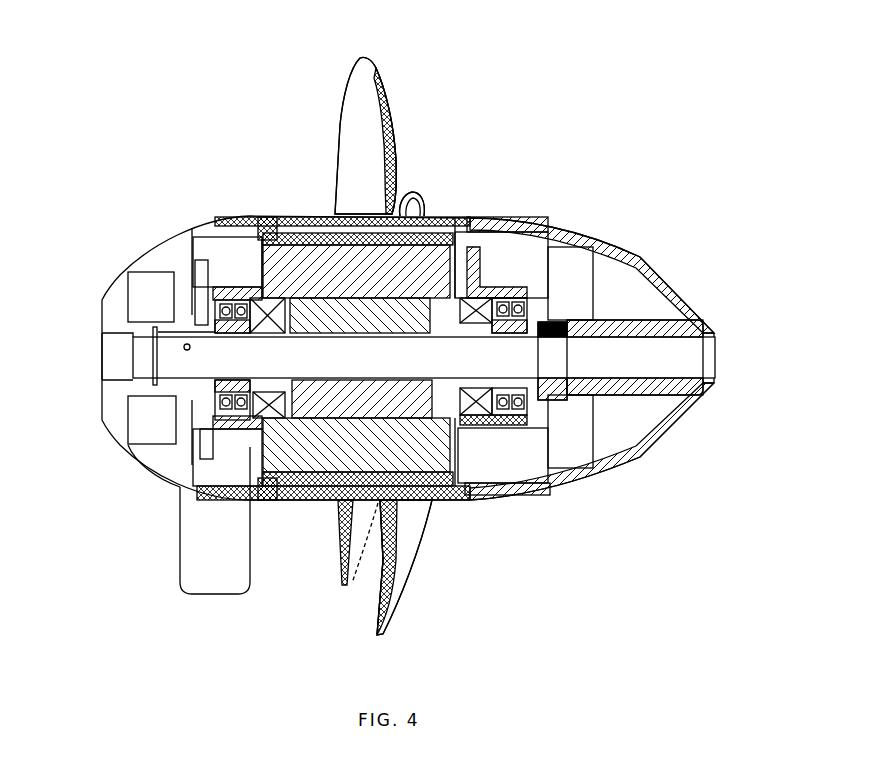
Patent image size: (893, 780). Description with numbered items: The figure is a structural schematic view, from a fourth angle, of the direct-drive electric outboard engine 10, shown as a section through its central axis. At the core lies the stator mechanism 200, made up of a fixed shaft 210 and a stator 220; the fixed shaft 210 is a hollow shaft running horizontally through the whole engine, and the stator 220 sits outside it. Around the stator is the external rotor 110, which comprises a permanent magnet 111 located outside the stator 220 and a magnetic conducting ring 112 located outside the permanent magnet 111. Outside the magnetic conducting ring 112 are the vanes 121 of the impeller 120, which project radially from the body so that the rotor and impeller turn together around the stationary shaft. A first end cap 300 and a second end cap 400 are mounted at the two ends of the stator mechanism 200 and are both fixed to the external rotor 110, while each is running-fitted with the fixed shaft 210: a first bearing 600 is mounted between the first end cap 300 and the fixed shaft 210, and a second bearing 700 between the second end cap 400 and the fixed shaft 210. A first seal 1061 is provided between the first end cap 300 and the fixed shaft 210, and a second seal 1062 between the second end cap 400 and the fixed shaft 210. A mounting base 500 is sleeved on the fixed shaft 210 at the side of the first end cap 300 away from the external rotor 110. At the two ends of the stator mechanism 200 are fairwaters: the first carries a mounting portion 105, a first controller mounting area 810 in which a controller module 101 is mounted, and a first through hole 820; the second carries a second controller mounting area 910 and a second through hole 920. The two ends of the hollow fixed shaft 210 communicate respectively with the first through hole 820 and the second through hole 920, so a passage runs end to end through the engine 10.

The direct-drive electric outboard engine 10 is at (406, 26).
The controller module 101 is at (150, 448).
The mounting portion 105 is at (190, 549).
The external rotor 110 is at (510, 107).
The permanent magnet 111 is at (415, 239).
The magnetic conducting ring 112 is at (420, 199).
The impeller 120 is at (303, 507).
The vanes 121 is at (357, 136).
The stator mechanism 200 is at (625, 576).
The fixed shaft 210 is at (517, 363).
The stator 220 is at (428, 505).
The first end cap 300 is at (250, 243).
The second end cap 400 is at (520, 290).
The mounting base 500 is at (112, 377).
The first bearing 600 is at (247, 290).
The second bearing 700 is at (530, 292).
The first controller mounting area 810 is at (162, 481).
The first through hole 820 is at (108, 344).
The second controller mounting area 910 is at (634, 432).
The second through hole 920 is at (715, 351).
The first seal 1061 is at (155, 252).
The second seal 1062 is at (548, 316).